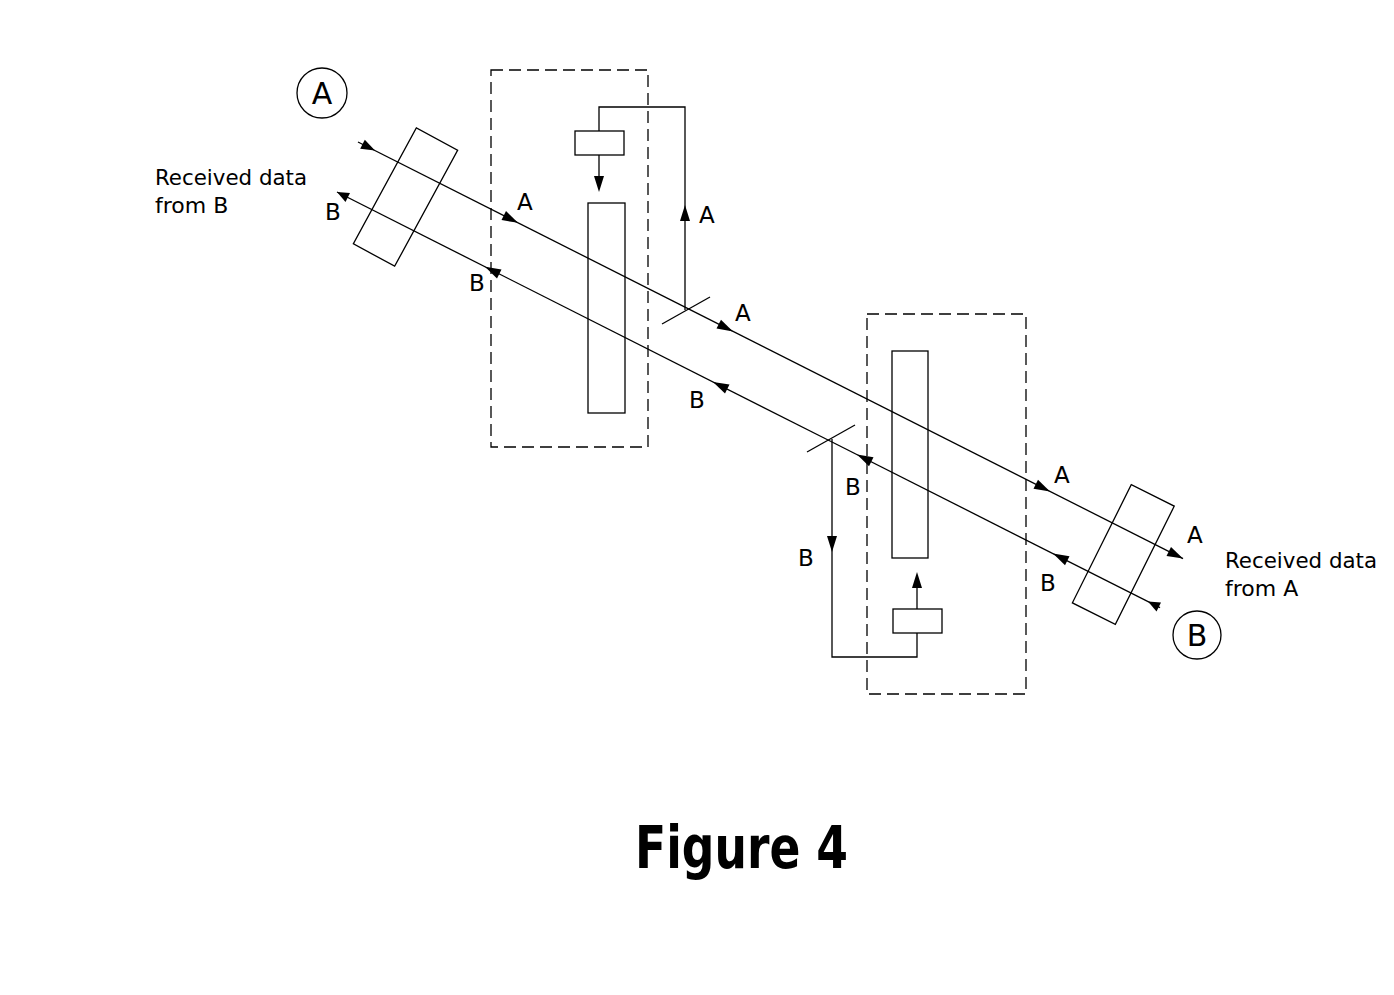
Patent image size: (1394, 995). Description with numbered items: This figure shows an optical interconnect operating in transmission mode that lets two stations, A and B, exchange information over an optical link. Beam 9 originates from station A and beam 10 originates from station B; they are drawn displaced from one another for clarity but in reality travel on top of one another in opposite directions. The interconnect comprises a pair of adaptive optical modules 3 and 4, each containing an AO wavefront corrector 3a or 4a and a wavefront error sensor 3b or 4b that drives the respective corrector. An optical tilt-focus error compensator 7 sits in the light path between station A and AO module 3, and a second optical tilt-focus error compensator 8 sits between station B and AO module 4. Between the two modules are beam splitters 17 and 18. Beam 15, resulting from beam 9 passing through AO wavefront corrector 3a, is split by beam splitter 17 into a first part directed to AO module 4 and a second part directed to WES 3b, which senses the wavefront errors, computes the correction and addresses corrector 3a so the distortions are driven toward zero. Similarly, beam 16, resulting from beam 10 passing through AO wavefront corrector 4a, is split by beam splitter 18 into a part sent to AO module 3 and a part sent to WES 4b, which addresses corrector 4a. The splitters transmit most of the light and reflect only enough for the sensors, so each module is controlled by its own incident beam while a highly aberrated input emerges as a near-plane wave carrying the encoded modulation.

The AO module 3 is at (553, 70).
The AO wavefront corrector 3a is at (588, 398).
The Wavefront Error Sensor 3b is at (585, 131).
The AO module 4 is at (934, 694).
The AO wavefront corrector 4a is at (928, 352).
The Wavefront Error Sensor 4b is at (935, 609).
The optical tilt-focus error compensator 7 is at (432, 128).
The optical tilt-focus error compensator 8 is at (1150, 493).
The beam 9 is at (465, 192).
The beam 10 is at (1070, 563).
The beam 15 is at (782, 357).
The beam 16 is at (758, 408).
The beam splitter 17 is at (690, 310).
The beam splitter 18 is at (830, 441).